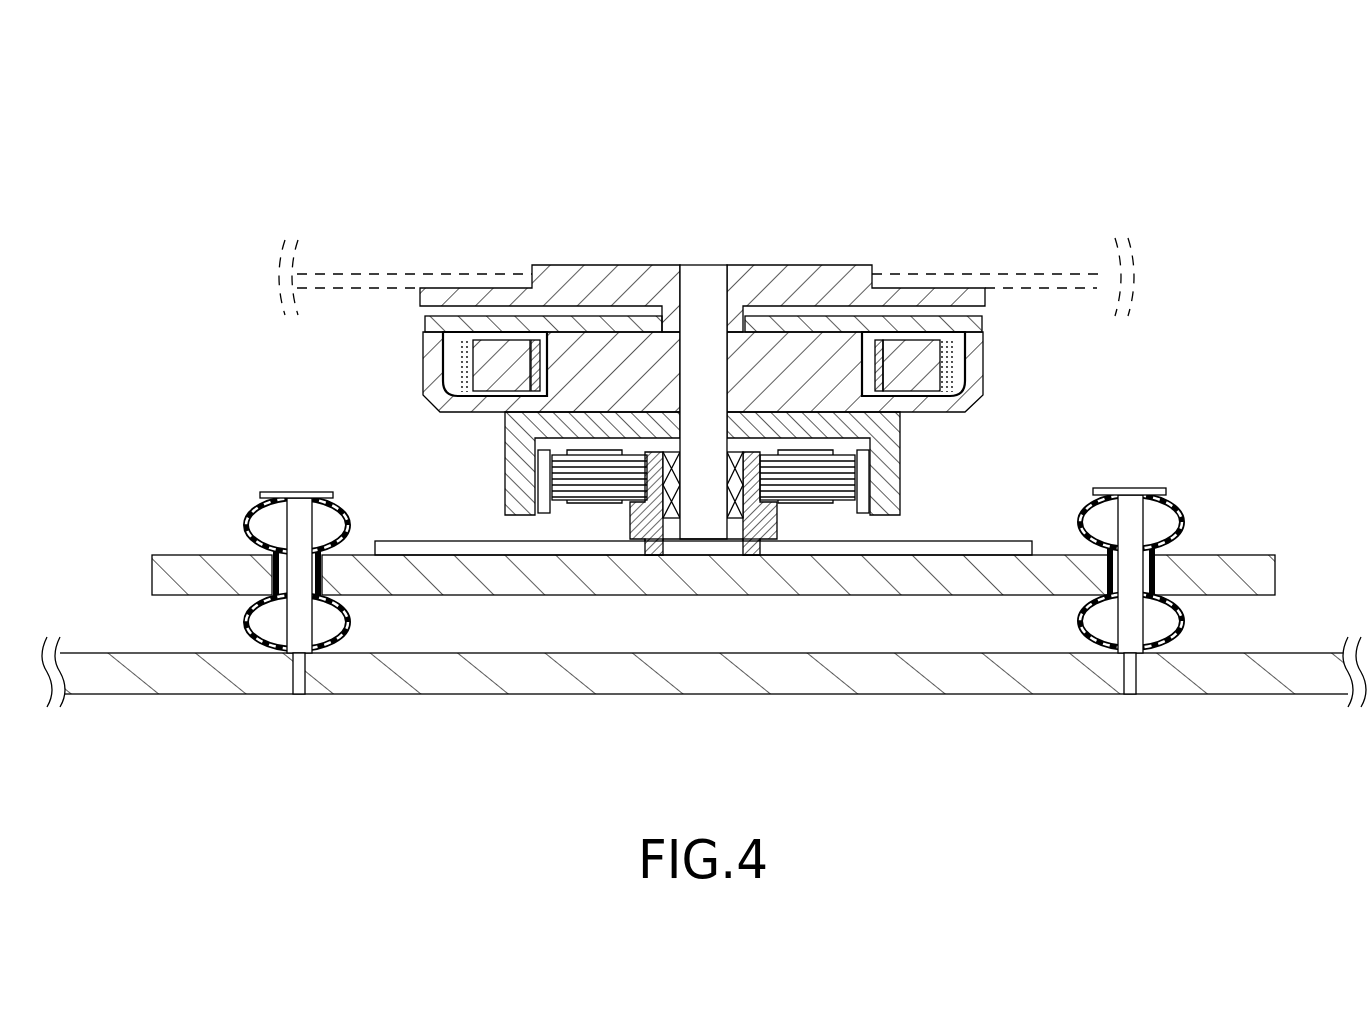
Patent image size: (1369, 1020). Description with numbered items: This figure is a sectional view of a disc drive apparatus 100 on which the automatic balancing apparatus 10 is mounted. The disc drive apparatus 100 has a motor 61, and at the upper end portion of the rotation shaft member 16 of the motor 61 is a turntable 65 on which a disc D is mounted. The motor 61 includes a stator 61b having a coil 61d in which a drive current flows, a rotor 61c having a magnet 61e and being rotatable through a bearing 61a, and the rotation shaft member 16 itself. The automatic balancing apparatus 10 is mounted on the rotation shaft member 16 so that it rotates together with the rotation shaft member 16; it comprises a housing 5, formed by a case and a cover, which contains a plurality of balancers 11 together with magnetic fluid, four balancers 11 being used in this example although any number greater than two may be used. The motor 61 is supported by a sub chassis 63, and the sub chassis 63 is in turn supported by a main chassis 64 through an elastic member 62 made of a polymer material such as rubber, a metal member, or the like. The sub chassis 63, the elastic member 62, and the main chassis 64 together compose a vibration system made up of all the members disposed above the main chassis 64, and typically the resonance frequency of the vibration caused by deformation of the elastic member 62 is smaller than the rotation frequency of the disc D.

The disc drive apparatus 100 is at (715, 147).
The disc D is at (390, 272).
The rotation shaft member 16 is at (690, 268).
The turntable 65 is at (800, 282).
The automatic balancing apparatus 10 is at (720, 373).
The balancers 11 is at (498, 373).
The housing 5 is at (988, 395).
The motor 61 is at (701, 526).
The bearing 61a is at (735, 515).
The stator 61b is at (590, 480).
The rotor 61c is at (900, 482).
The coil 61d is at (575, 503).
The magnet 61e is at (855, 510).
The elastic member 62 is at (355, 632).
The sub chassis 63 is at (1058, 555).
The main chassis 64 is at (853, 676).